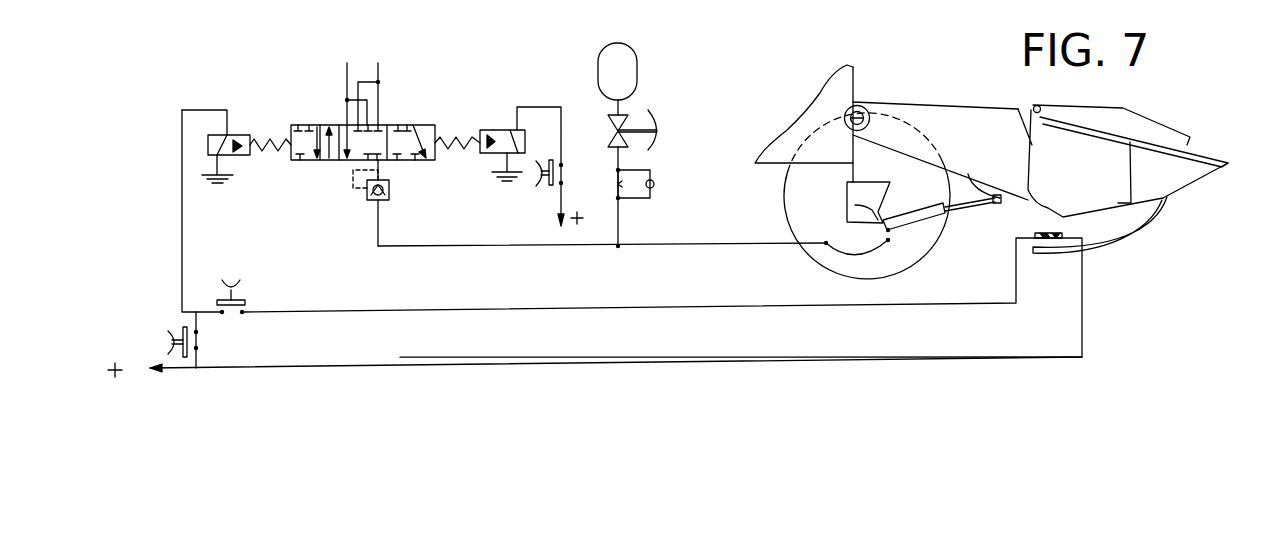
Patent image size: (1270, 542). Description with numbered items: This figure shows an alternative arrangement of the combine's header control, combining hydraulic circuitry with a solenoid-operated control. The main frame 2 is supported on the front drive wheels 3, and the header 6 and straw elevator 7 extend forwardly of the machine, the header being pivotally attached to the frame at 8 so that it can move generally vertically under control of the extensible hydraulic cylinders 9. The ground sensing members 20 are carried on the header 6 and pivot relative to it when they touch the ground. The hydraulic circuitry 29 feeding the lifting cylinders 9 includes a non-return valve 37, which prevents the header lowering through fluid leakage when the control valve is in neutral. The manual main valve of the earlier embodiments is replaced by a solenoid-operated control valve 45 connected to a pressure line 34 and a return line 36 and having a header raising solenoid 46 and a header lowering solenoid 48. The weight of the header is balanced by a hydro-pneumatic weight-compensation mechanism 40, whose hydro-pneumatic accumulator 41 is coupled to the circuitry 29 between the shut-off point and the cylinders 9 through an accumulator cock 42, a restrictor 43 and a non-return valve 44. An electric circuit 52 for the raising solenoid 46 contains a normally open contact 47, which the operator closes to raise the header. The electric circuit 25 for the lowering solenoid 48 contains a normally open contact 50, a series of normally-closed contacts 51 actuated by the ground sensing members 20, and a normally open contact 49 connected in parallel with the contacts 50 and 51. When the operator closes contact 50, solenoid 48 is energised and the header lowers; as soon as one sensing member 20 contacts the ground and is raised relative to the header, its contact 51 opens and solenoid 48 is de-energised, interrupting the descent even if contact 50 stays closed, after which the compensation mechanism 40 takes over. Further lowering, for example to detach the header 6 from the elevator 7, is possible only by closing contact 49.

The main frame 2 is at (855, 88).
The front drive wheels 3 is at (786, 204).
The header 6 is at (1180, 200).
The straw elevator 7 is at (957, 105).
The pivotal attachment 8 is at (870, 112).
The hydraulic cylinders 9 is at (927, 221).
The ground sensing members 20 is at (1140, 230).
The electric circuit of the lowering solenoid 25 is at (942, 359).
The hydraulic circuitry 29 is at (660, 246).
The pressure line 34 is at (346, 68).
The return line 36 is at (379, 72).
The non-return valve 37 is at (366, 197).
The hydro-pneumatic weight-compensation mechanism 40 is at (657, 127).
The hydro-pneumatic accumulator 41 is at (637, 52).
The accumulator cock 42 is at (660, 131).
The restrictor 43 is at (616, 184).
The non-return valve 44 is at (655, 184).
The solenoid-operated control valve 45 is at (390, 126).
The header raising solenoid 46 is at (492, 157).
The normally open contact 47 is at (547, 184).
The header lowering solenoid 48 is at (222, 158).
The normally open contact 49 is at (180, 331).
The normally open contact 50 is at (240, 302).
The normally-closed contacts 51 is at (1050, 252).
The electric circuit of the raising solenoid 52 is at (534, 104).